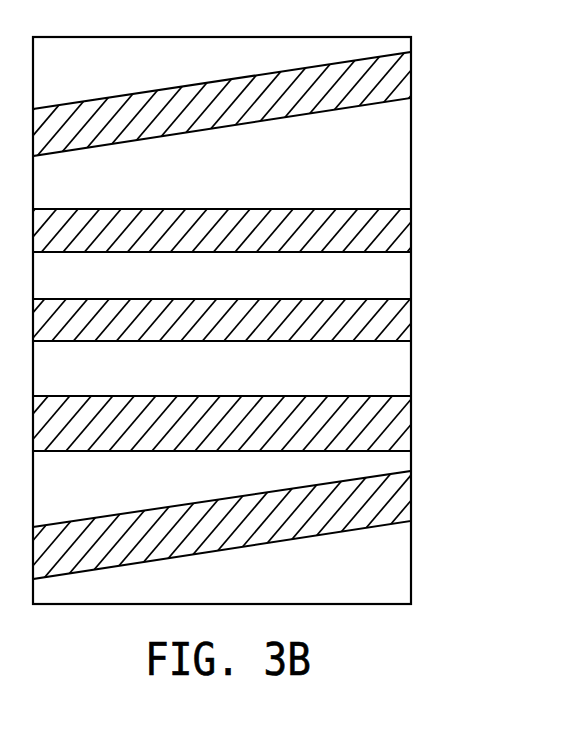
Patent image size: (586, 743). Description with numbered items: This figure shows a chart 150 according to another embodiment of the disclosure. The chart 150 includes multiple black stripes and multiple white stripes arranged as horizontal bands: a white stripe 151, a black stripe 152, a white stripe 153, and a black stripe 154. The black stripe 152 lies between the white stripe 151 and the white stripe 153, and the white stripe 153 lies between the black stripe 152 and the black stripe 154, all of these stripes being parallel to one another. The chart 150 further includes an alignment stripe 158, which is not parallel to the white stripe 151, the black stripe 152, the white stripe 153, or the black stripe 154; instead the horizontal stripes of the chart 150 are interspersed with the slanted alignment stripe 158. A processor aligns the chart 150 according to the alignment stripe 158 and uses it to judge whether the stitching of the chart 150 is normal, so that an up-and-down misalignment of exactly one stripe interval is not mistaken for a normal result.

The chart 150 is at (496, 626).
The white stripe 151 is at (405, 278).
The black stripe 152 is at (407, 320).
The white stripe 153 is at (405, 369).
The black stripe 154 is at (407, 427).
The alignment stripe 158 is at (407, 76).